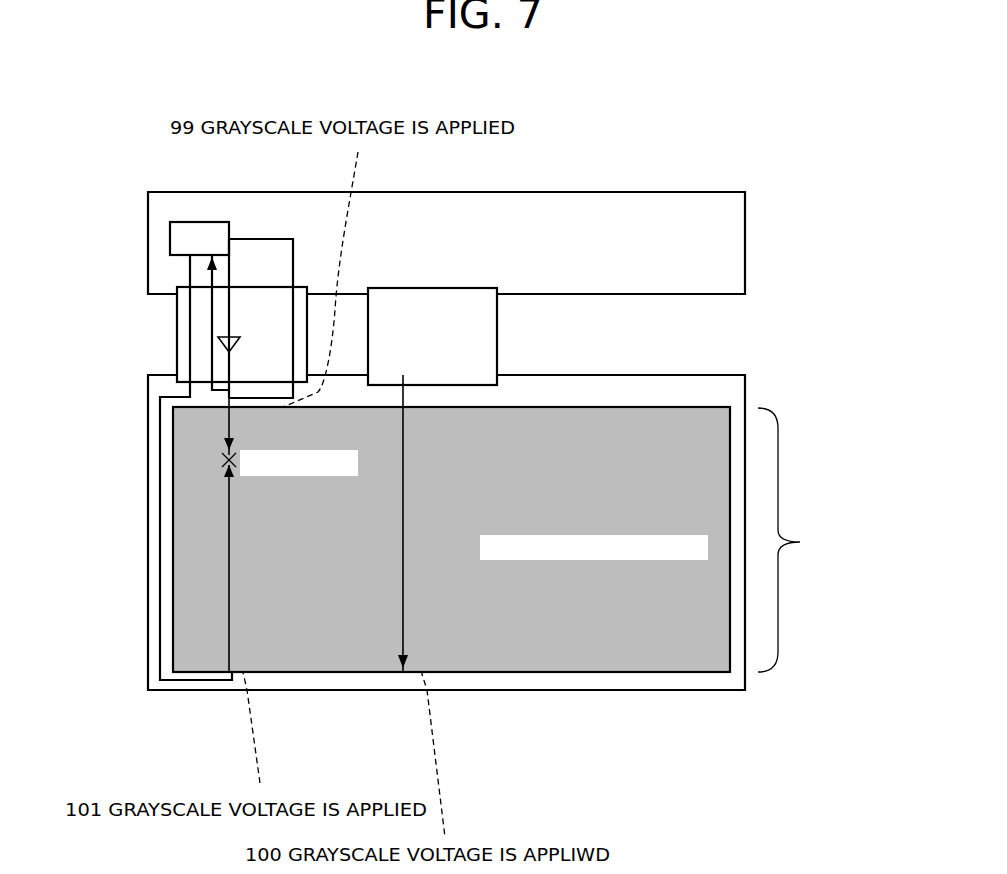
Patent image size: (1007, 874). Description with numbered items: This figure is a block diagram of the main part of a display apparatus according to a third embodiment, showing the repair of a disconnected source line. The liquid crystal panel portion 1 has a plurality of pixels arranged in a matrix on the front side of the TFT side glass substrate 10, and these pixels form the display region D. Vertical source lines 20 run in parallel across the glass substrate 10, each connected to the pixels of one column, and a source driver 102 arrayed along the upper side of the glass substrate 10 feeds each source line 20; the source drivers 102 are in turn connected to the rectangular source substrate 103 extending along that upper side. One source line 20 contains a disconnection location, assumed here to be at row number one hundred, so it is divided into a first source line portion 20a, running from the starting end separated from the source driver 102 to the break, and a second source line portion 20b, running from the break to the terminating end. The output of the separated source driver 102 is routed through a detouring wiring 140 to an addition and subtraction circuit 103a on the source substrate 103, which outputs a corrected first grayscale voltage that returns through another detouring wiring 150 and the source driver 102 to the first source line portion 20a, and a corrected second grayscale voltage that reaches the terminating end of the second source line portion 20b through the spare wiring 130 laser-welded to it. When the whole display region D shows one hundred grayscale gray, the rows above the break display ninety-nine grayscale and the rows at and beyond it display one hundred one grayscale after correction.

The liquid crystal panel portion 1 is at (748, 371).
The TFT side glass substrate 10 is at (547, 572).
The source line 20 is at (278, 523).
The first source line portion 20a is at (229, 418).
The second source line portion 20b is at (229, 572).
The source driver 102 is at (432, 300).
The source substrate 103 is at (677, 192).
The addition and subtraction circuit 103a is at (180, 238).
The spare wiring 130 is at (158, 508).
The detouring wiring 140 is at (216, 305).
The detouring wiring 150 is at (253, 239).
The display region D is at (603, 405).